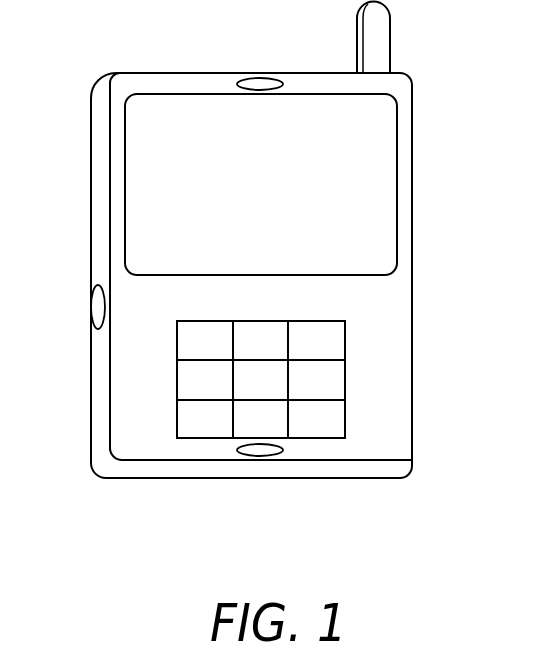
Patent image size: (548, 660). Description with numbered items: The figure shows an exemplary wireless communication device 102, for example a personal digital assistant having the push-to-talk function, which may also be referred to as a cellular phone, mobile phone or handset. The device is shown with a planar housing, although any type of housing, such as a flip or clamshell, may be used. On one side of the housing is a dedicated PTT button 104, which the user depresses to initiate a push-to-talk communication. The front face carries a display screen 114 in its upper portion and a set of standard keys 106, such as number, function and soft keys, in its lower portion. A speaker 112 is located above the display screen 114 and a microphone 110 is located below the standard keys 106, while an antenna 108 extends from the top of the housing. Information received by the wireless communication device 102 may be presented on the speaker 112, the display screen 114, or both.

The wireless communication device 102 is at (414, 268).
The dedicated PTT button 104 is at (95, 307).
The standard keys 106 is at (204, 437).
The antenna 108 is at (392, 45).
The microphone 110 is at (261, 450).
The speaker 112 is at (258, 82).
The display screen 114 is at (398, 185).